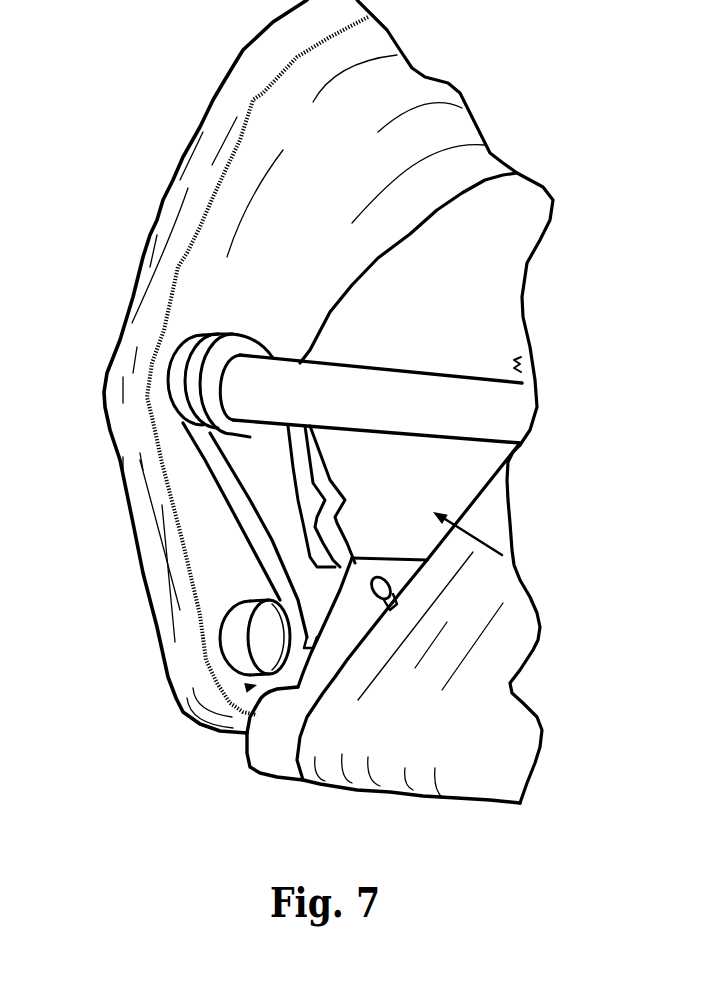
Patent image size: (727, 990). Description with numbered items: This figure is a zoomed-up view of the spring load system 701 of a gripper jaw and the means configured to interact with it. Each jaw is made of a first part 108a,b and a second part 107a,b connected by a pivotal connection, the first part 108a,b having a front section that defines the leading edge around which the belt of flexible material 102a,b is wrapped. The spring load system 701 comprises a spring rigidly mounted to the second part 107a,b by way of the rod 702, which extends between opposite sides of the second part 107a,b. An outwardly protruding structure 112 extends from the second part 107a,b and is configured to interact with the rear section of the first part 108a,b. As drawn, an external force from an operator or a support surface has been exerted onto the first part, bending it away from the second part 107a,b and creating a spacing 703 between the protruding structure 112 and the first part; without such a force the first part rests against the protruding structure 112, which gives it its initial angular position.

The second part 107a,b is at (328, 267).
The spring load system 701 is at (223, 480).
The rod 702 is at (470, 418).
The belt of flexible material 102a,b is at (487, 725).
The first part 108a,b is at (307, 687).
The outwardly protruding structure 112 is at (263, 642).
The spacing 703 is at (245, 688).